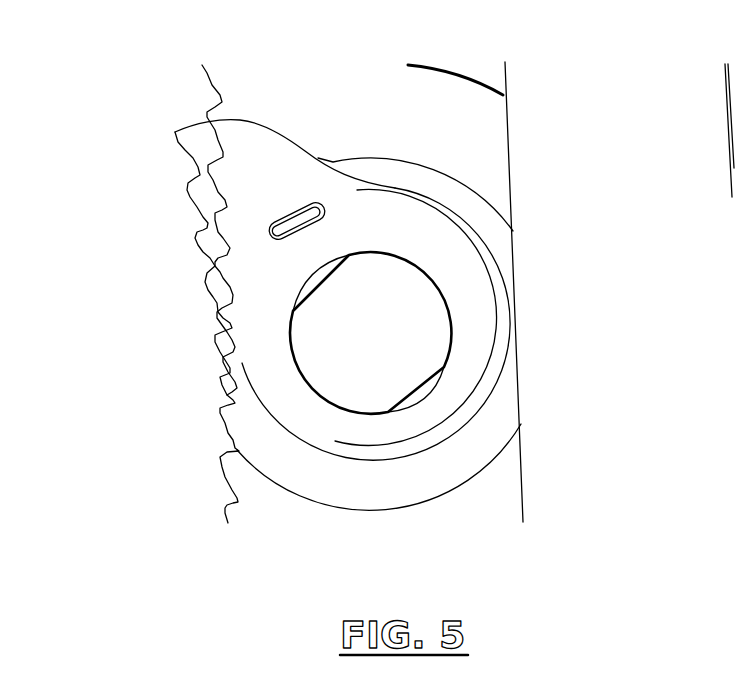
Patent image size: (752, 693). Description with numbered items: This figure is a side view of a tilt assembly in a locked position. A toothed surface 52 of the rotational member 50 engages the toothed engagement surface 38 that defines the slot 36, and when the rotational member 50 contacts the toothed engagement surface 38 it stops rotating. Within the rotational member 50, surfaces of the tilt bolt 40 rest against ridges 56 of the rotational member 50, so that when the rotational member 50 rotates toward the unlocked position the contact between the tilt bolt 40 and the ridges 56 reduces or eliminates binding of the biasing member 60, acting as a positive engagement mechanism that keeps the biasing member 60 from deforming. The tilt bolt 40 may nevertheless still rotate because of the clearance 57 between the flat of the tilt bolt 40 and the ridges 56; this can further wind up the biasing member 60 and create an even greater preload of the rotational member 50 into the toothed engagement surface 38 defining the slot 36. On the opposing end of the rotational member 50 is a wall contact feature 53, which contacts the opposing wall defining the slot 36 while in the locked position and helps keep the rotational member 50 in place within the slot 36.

The slot 36 is at (490, 508).
The toothed engagement surface 38 is at (215, 92).
The tilt bolt 40 is at (407, 330).
The rotational member 50 is at (452, 268).
The toothed surface 52 is at (233, 270).
The wall contact feature 53 is at (502, 320).
The ridges 56 is at (297, 303).
The clearance 57 is at (345, 258).
The biasing member 60 is at (312, 200).